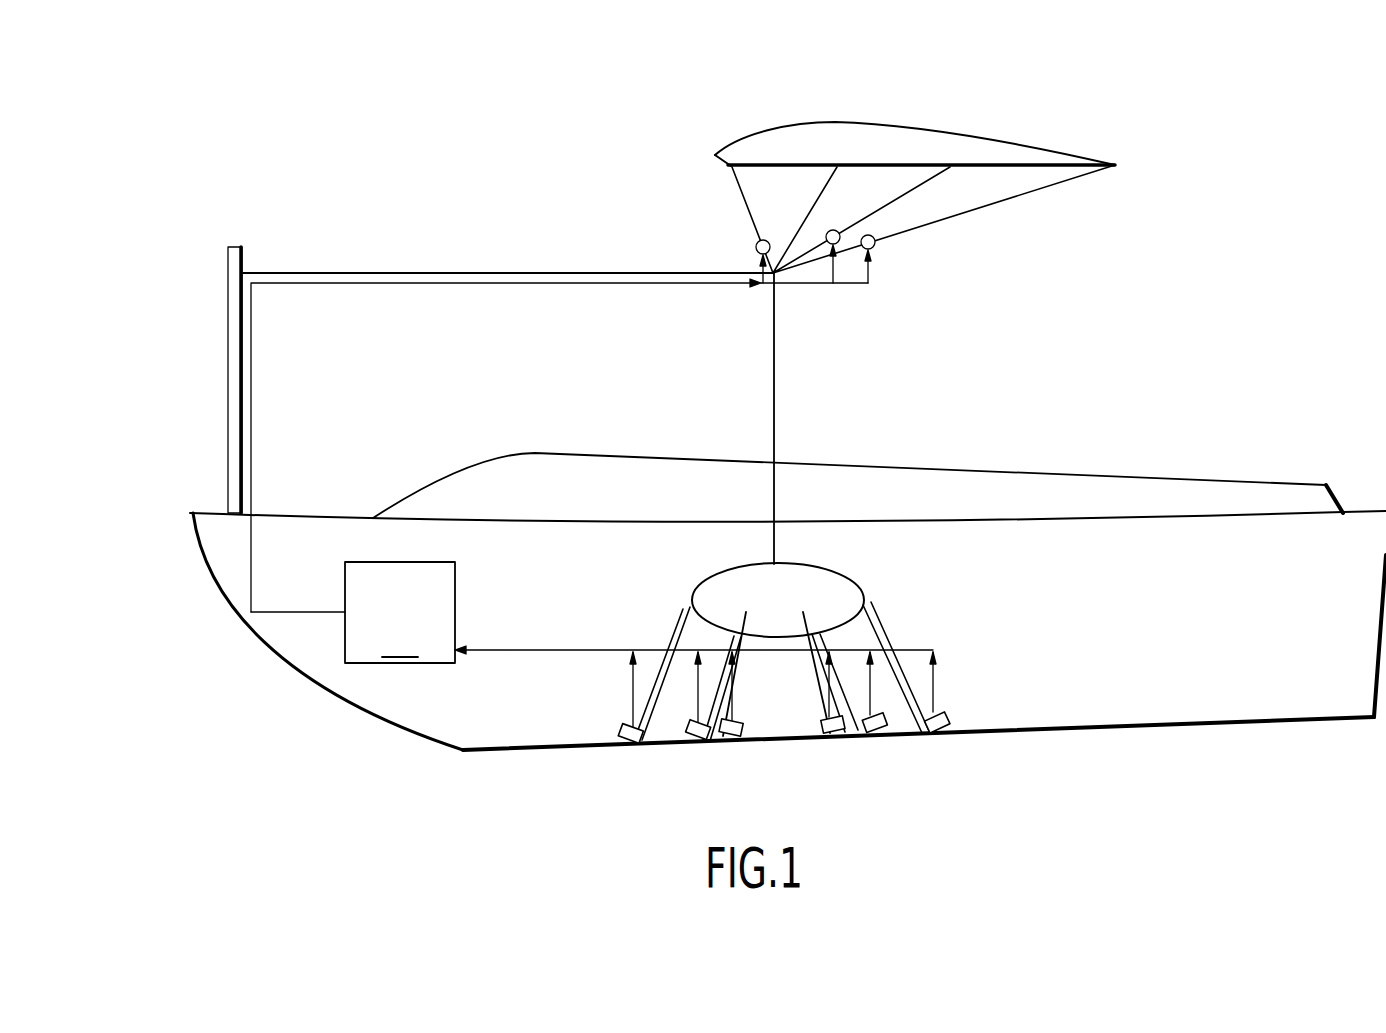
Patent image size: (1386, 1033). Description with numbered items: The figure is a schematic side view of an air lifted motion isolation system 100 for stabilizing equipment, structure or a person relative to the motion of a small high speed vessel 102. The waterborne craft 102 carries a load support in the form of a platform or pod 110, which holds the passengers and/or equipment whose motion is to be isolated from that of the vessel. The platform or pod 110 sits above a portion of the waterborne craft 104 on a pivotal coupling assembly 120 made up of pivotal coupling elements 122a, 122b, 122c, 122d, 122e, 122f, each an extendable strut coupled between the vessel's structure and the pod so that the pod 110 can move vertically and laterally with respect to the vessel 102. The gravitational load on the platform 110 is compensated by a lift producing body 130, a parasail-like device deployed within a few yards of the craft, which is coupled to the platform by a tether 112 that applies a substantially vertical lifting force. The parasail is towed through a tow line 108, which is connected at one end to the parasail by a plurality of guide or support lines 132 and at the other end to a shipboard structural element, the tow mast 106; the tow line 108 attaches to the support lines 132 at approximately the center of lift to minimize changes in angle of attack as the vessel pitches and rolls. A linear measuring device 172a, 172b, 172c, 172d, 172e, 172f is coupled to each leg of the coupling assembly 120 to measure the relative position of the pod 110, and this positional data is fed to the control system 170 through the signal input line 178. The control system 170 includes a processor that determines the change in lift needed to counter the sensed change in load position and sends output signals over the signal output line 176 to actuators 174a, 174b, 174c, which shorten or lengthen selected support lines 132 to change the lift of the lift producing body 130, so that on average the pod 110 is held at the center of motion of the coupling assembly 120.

The air lifted motion isolation system 100 is at (828, 91).
The vessel 102 is at (500, 722).
The portion of the waterborne craft 104 is at (1152, 722).
The tow mast 106 is at (230, 372).
The tow line 108 is at (500, 272).
The platform or pod 110 is at (823, 567).
The tether 112 is at (778, 356).
The pivotal coupling assembly 120 is at (976, 652).
The pivotal coupling element 122a is at (868, 612).
The pivotal coupling element 122b is at (870, 735).
The pivotal coupling element 122c is at (717, 697).
The pivotal coupling element 122d is at (680, 632).
The pivotal coupling element 122e is at (755, 745).
The pivotal coupling element 122f is at (833, 708).
The lift producing body 130 is at (940, 130).
The support lines 132 is at (743, 208).
The control system 170 is at (353, 612).
The linear measuring device 172a is at (947, 721).
The linear measuring device 172b is at (878, 722).
The linear measuring device 172c is at (697, 737).
The linear measuring device 172d is at (620, 730).
The linear measuring device 172e is at (742, 730).
The linear measuring device 172f is at (823, 726).
The actuator 174a is at (771, 237).
The actuator 174b is at (836, 228).
The actuator 174c is at (877, 250).
The signal output line 176 is at (440, 285).
The signal input line 178 is at (495, 650).